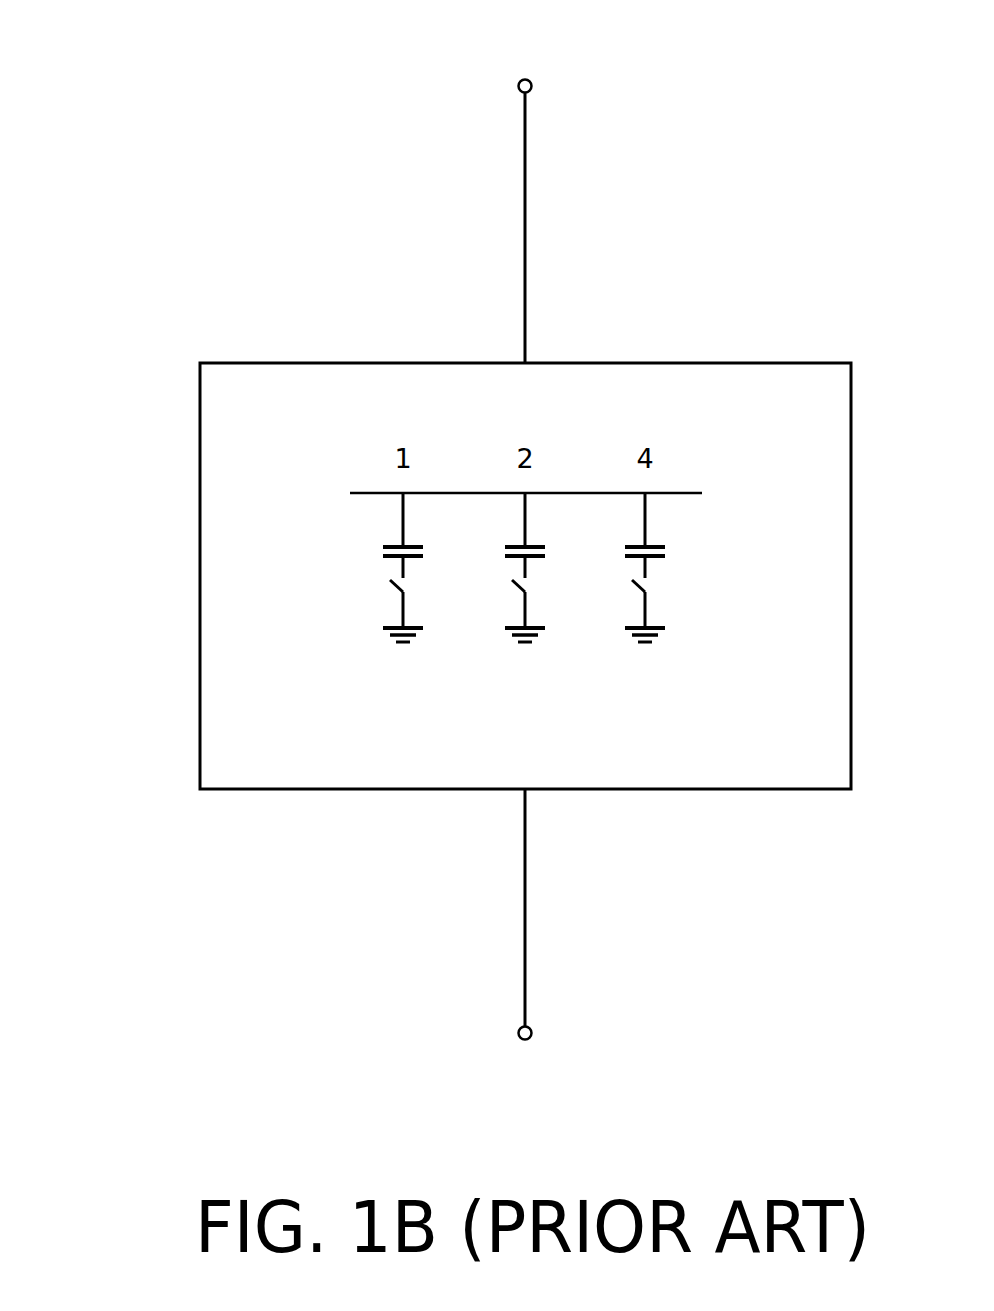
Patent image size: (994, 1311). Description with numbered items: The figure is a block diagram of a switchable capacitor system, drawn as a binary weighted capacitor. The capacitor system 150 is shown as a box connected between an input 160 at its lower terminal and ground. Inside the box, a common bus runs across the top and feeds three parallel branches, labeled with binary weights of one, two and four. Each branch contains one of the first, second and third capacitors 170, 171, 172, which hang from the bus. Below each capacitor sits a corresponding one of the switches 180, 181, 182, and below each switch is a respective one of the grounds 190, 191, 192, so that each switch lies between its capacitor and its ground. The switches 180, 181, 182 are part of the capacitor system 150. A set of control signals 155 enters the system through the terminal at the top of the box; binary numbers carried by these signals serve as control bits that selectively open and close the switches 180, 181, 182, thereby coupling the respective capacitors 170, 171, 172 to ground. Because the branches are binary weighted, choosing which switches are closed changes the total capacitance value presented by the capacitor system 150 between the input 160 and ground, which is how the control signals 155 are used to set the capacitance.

The capacitor system 150 is at (223, 363).
The control signals 155 is at (522, 183).
The input 160 is at (529, 933).
The first capacitor 170 is at (386, 535).
The second capacitor 171 is at (508, 535).
The third capacitor 172 is at (628, 535).
The switch 180 is at (417, 604).
The switch 181 is at (539, 604).
The switch 182 is at (659, 604).
The ground 190 is at (417, 642).
The ground 191 is at (539, 642).
The ground 192 is at (659, 642).